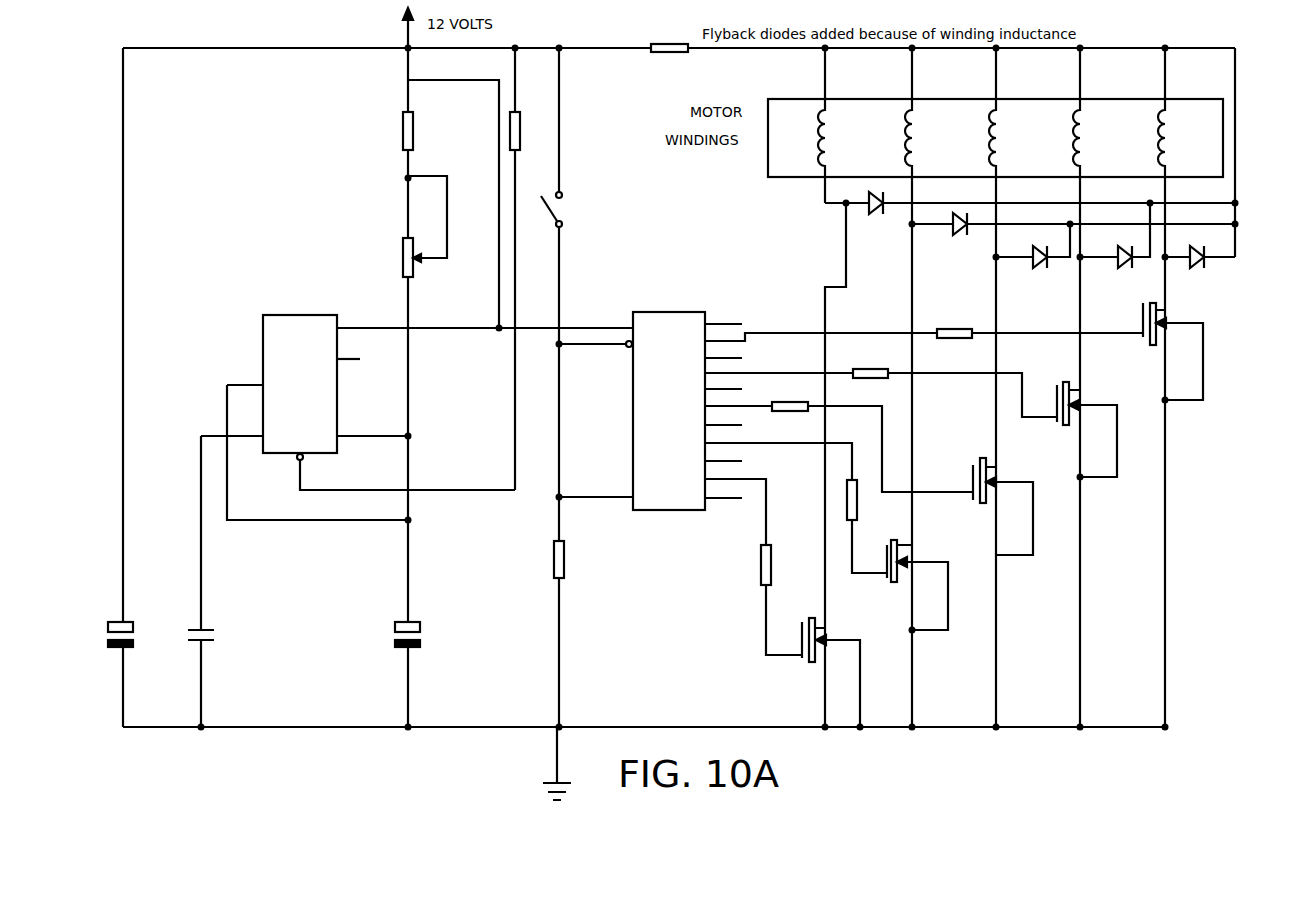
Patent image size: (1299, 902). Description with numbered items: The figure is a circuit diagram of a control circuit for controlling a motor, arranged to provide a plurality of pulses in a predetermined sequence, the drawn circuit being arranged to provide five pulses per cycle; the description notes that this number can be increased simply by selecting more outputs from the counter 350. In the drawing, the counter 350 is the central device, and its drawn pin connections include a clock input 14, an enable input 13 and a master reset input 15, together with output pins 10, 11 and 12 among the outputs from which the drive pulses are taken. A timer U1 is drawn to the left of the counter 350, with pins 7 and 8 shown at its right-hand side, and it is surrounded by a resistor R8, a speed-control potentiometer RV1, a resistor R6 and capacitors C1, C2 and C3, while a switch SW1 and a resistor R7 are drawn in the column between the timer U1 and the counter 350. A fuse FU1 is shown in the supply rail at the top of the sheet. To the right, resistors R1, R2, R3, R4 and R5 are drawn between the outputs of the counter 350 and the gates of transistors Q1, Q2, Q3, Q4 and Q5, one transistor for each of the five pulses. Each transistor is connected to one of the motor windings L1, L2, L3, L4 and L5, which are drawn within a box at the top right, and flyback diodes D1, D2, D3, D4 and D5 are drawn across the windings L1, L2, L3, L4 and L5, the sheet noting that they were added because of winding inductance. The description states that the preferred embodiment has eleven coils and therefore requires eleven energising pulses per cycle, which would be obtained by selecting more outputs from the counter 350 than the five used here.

The counter 350 is at (821, 440).
The clock input pin of counter 14 is at (566, 318).
The enable input pin of counter 13 is at (595, 352).
The master reset pin of counter 15 is at (596, 488).
The Q4 output pin of counter 10 is at (723, 382).
The Q9 output pin of counter 11 is at (735, 470).
The carry-out pin of counter 12 is at (723, 489).
The discharge pin of timer 7 is at (348, 349).
The threshold pin of timer 8 is at (372, 425).
The CMOS 555 timer U1 is at (417, 396).
The resistor 2k2 R8 is at (427, 113).
The speed control potentiometer RV1 is at (377, 399).
The resistor 1k R6 is at (525, 269).
The reset switch SW1 is at (646, 196).
The resistor R7 is at (572, 535).
The fuse FU1 is at (706, 51).
The capacitor C1 is at (230, 581).
The capacitor C2 is at (452, 632).
The capacitor C3 is at (144, 642).
The gate resistor R1 is at (784, 600).
The gate resistor R2 is at (869, 526).
The gate resistor R3 is at (790, 406).
The gate resistor R4 is at (870, 372).
The gate resistor R5 is at (954, 325).
The MOSFET Q1 is at (873, 683).
The MOSFET Q2 is at (958, 740).
The MOSFET Q3 is at (1180, 540).
The MOSFET Q4 is at (1180, 455).
The MOSFET Q5 is at (1200, 351).
The flyback diode D1 is at (1202, 258).
The flyback diode D2 is at (878, 208).
The flyback diode D3 is at (950, 229).
The flyback diode D4 is at (1034, 258).
The flyback diode D5 is at (1119, 258).
The motor winding L1 is at (930, 138).
The motor winding L2 is at (1014, 138).
The motor winding L3 is at (1098, 138).
The motor winding L4 is at (1183, 138).
The motor winding L5 is at (843, 138).